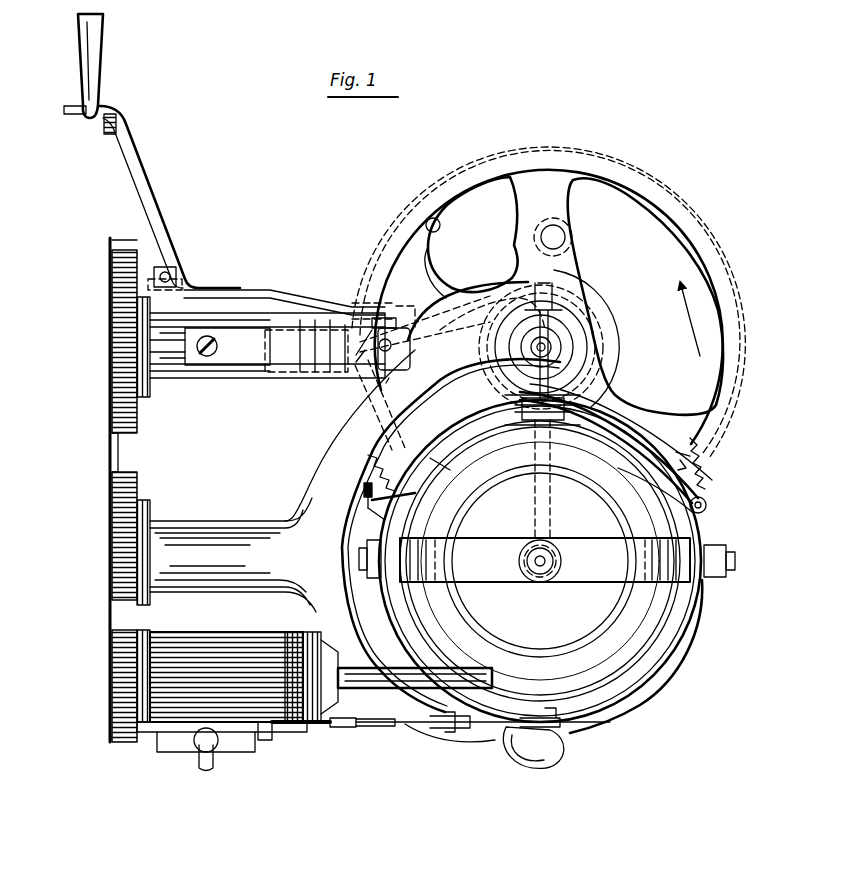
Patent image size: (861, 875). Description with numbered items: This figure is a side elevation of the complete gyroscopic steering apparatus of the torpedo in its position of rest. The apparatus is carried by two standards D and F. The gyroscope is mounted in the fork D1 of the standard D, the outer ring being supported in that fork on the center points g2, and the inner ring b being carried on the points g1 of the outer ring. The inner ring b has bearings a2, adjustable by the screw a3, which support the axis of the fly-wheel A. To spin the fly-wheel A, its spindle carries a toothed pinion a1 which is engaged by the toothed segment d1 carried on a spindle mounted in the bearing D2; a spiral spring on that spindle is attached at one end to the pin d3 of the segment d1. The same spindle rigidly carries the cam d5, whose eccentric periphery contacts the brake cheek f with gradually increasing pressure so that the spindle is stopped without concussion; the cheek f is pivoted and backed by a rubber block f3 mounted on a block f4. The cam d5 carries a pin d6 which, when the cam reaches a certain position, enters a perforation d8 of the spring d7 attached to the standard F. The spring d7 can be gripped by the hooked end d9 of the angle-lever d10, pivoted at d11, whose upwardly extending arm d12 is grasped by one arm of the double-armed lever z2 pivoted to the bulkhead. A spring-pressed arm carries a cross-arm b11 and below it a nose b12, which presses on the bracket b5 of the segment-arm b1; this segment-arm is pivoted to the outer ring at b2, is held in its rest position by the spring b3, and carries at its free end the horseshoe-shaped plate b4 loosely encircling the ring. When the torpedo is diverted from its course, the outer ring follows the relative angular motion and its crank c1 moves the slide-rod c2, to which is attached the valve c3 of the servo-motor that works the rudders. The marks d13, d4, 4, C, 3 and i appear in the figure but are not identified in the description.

The double-armed lever z2 is at (97, 67).
The pin d13 is at (75, 118).
The upwardly-extending arm d12 is at (157, 225).
The pivot d11 is at (185, 287).
The angle-lever d10 is at (300, 308).
The spring d7 is at (306, 351).
The perforation d8 is at (379, 344).
The hooked end d9 is at (392, 322).
The pin d6 is at (440, 225).
The cam d5 is at (430, 249).
The pin d3 is at (566, 237).
The ratchet wheel d4 is at (598, 307).
The toothed segment d1 is at (708, 462).
The segment-arm b1 is at (485, 283).
The bearing D2 is at (588, 340).
The bearings a2 is at (548, 352).
The toothed pinion a1 is at (545, 360).
The direction arrow 4 is at (690, 320).
The standard F is at (215, 378).
The block f4 is at (295, 375).
The rubber block f3 is at (324, 375).
The brake cheek f is at (348, 375).
The fork D1 is at (422, 531).
The standard D is at (233, 555).
The motor C is at (237, 701).
The crank c1 is at (410, 668).
The valve c3 is at (340, 728).
The slide-rod c2 is at (402, 727).
The center points g2 is at (552, 738).
The fly-wheel A is at (600, 428).
The inner ring b is at (545, 561).
The screw a3 is at (535, 582).
The bracket b5 is at (543, 420).
The cross-arm b11 is at (525, 425).
The nose b12 is at (566, 420).
The pivot b2 is at (718, 508).
The spring b3 is at (650, 480).
The pin 3 is at (363, 502).
The horseshoe-shaped plate b4 is at (390, 515).
The points g1 is at (392, 568).
The band end i is at (655, 672).